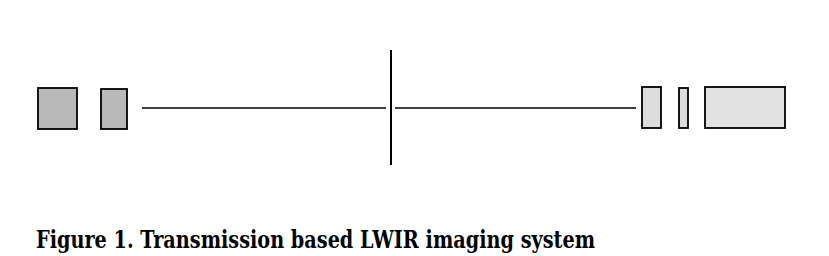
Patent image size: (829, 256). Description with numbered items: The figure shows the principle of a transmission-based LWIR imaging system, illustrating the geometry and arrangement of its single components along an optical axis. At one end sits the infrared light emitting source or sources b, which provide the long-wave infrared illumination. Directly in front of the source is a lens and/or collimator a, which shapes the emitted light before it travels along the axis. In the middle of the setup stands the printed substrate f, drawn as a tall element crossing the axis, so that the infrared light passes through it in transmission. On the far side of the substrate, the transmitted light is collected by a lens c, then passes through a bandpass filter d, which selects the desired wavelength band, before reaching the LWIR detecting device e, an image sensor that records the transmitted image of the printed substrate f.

The lens and/or collimator a is at (114, 109).
The infrared light emitting source or sources b is at (57, 108).
The lens c is at (651, 107).
The bandpass filter d is at (683, 95).
The LWIR detecting device (image sensor) e is at (745, 107).
The printed substrate f is at (399, 95).